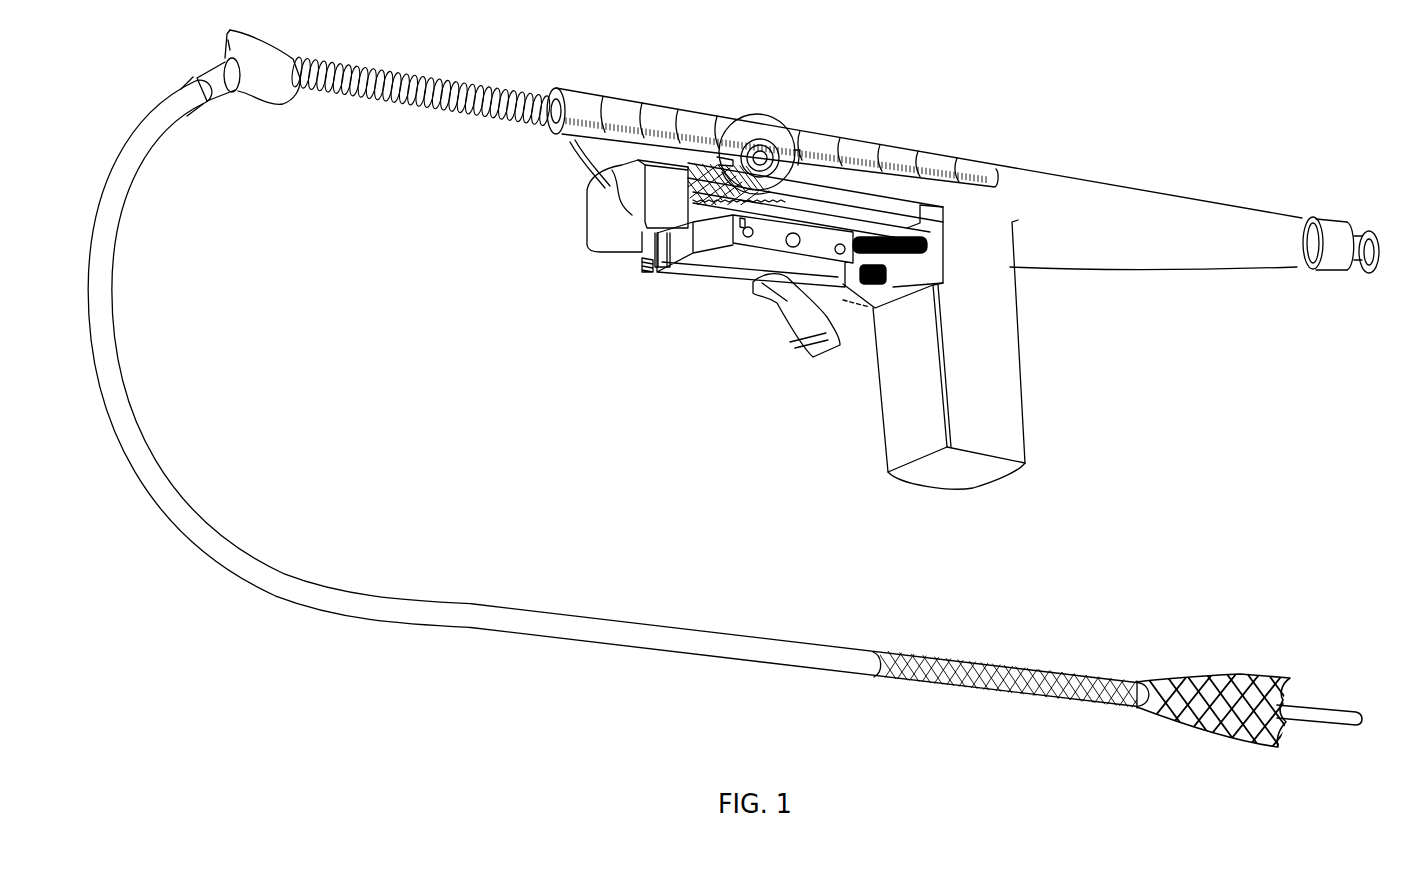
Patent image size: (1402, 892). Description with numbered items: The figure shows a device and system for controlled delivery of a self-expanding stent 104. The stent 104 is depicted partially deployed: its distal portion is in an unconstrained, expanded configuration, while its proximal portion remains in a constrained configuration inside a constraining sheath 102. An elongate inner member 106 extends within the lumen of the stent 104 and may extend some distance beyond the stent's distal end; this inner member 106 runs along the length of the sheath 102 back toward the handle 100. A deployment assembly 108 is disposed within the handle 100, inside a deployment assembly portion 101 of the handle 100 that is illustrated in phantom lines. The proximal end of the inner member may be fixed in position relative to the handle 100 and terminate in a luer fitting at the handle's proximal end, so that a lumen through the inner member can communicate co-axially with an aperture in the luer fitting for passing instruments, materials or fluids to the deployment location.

The handle 100 is at (834, 272).
The deployment assembly portion 101 is at (720, 280).
The constraining sheath 102 is at (1027, 665).
The stent 104 is at (1233, 673).
The elongate inner member 106 is at (643, 638).
The deployment assembly 108 is at (638, 266).